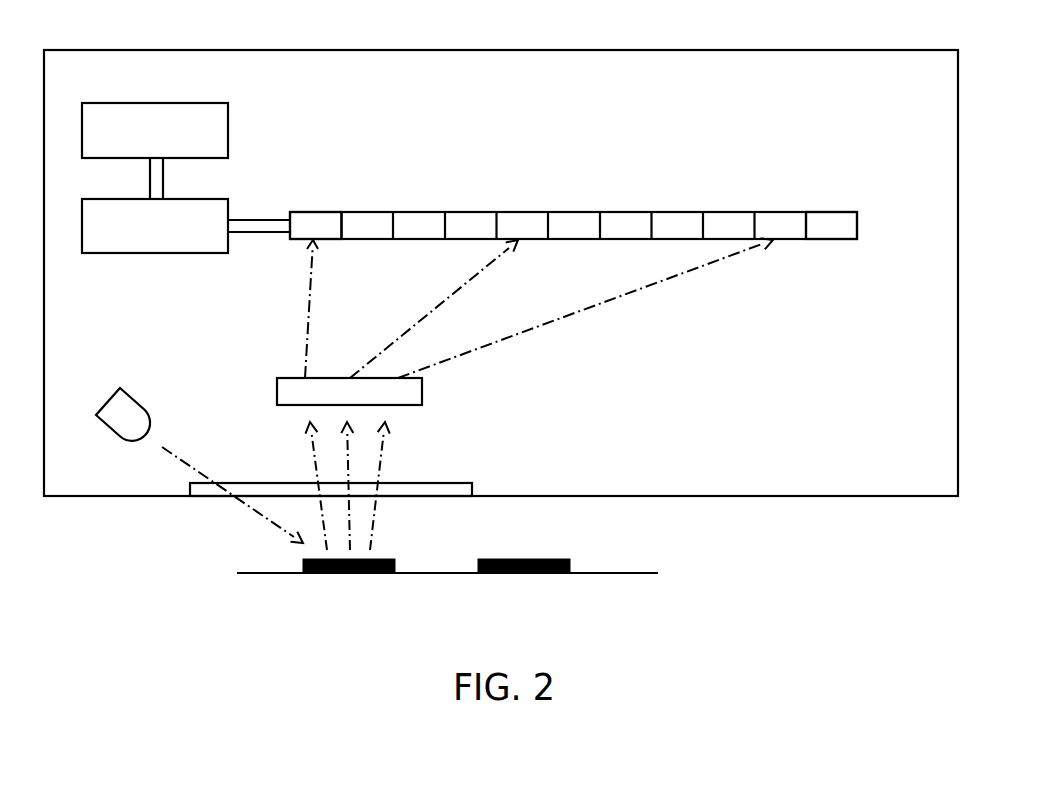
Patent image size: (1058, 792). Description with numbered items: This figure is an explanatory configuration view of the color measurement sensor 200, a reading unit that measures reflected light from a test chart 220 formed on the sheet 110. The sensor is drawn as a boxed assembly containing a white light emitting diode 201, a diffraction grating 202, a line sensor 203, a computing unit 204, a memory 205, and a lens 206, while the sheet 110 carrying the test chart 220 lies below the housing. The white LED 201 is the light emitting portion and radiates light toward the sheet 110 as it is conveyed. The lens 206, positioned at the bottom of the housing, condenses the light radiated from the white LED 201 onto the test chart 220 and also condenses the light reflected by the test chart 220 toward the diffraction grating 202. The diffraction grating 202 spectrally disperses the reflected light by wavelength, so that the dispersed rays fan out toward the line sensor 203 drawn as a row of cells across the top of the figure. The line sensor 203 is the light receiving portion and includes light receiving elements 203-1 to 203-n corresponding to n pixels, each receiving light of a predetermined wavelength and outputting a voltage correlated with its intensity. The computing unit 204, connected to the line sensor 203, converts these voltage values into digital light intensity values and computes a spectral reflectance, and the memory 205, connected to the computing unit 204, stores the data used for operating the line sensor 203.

The color measurement sensor 200 is at (722, 50).
The memory 205 is at (228, 120).
The computing unit 204 is at (228, 205).
The line sensor 203 is at (588, 184).
The light receiving element 203-1 is at (340, 192).
The light receiving element 203-n is at (858, 192).
The diffraction grating 202 is at (422, 390).
The white light emitting diode 201 is at (138, 398).
The lens 206 is at (473, 483).
The test chart 220 is at (397, 560).
The sheet 110 is at (607, 574).